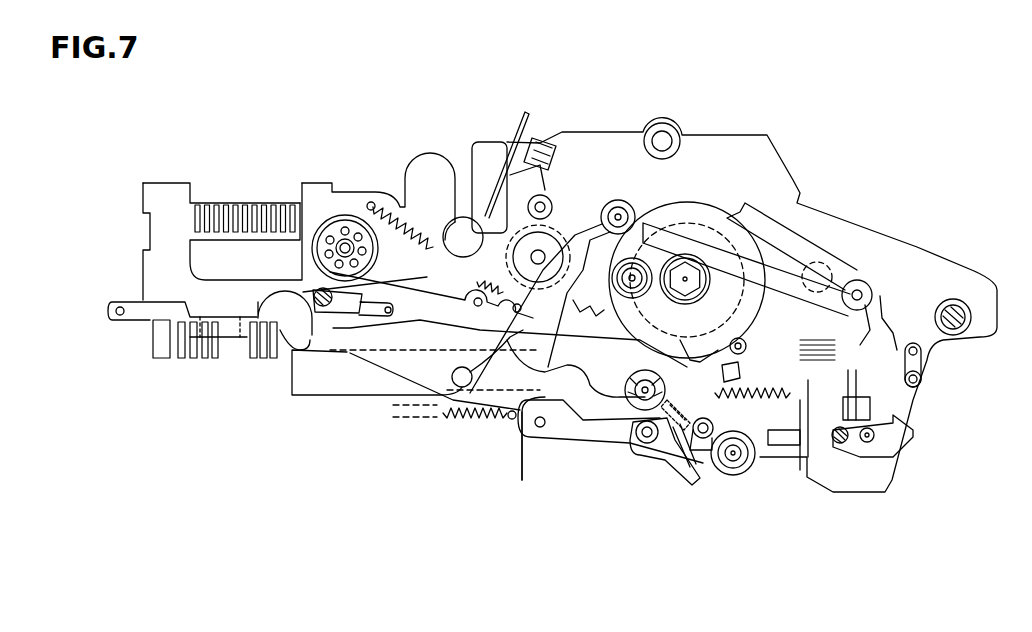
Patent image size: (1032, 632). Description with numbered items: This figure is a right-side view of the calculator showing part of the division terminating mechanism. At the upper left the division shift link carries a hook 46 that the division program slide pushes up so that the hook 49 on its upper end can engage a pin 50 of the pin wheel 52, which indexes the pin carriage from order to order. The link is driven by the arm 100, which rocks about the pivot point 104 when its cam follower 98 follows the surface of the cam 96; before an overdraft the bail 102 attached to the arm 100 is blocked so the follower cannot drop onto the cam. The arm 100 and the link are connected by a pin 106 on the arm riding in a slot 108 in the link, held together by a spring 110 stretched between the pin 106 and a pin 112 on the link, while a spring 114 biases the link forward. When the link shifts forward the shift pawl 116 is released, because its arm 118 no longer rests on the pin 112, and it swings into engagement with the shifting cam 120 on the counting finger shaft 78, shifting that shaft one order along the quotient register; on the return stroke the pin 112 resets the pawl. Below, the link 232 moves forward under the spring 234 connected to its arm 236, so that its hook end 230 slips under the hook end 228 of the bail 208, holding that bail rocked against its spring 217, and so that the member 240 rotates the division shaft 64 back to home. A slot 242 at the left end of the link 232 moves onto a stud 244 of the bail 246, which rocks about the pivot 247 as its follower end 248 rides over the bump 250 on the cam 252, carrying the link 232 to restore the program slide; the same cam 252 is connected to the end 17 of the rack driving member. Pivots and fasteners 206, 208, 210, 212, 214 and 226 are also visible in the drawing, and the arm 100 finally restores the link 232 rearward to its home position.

The end of driving member 17 is at (612, 318).
The hook of division shift link 46 is at (295, 352).
The hook 49 is at (373, 275).
The pin of pin wheel 50 is at (348, 232).
The pin wheel 52 is at (368, 248).
The division shaft 64 is at (740, 470).
The counting finger shaft 78 is at (648, 438).
The cam 96 is at (750, 244).
The cam follower 98 is at (752, 376).
The arm 100 is at (864, 293).
The bail 102 is at (845, 445).
The pivot point 104 is at (820, 272).
The pin 106 is at (803, 472).
The slot 108 is at (812, 460).
The spring 110 is at (797, 446).
The pin 112 is at (693, 365).
The spring 114 is at (412, 224).
The shift pawl 116 is at (665, 445).
The arm of shift pawl 118 is at (727, 360).
The shifting cam 120 is at (640, 411).
The pin 206 is at (922, 378).
The bail 208 is at (958, 306).
The housing 210 is at (478, 163).
The opening 212 is at (464, 236).
The gear 214 is at (475, 282).
The spring 217 is at (910, 440).
The link 226 is at (937, 353).
The hook end of bail 228 is at (828, 350).
The hook end of link 230 is at (876, 395).
The link 232 is at (582, 403).
The spring 234 is at (450, 418).
The arm of link 236 is at (521, 430).
The member 240 is at (703, 440).
The slot 242 is at (332, 363).
The stud 244 is at (317, 373).
The bail 246 is at (155, 318).
The pivot 247 is at (465, 387).
The follower end 248 is at (623, 210).
The bump 250 is at (557, 310).
The cam 252 is at (690, 205).